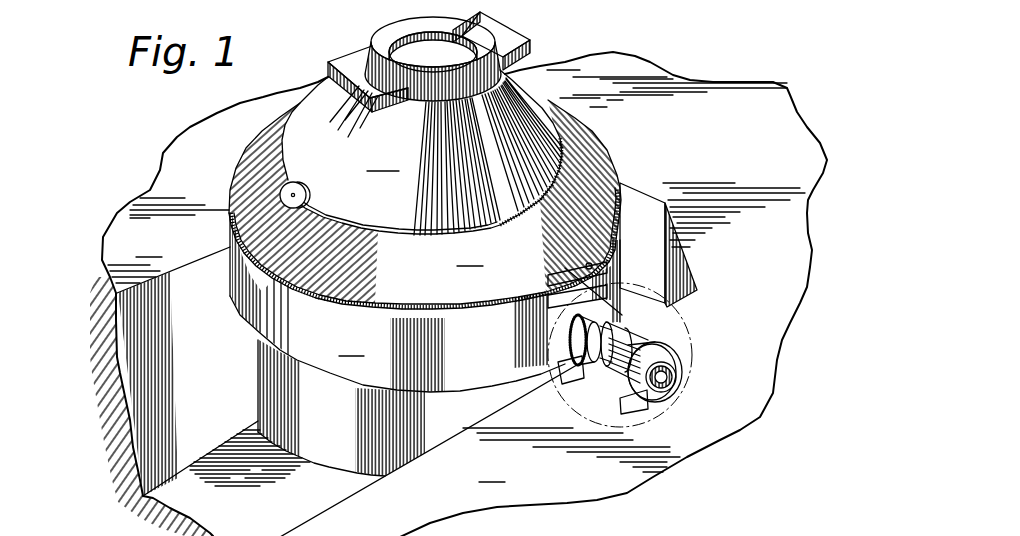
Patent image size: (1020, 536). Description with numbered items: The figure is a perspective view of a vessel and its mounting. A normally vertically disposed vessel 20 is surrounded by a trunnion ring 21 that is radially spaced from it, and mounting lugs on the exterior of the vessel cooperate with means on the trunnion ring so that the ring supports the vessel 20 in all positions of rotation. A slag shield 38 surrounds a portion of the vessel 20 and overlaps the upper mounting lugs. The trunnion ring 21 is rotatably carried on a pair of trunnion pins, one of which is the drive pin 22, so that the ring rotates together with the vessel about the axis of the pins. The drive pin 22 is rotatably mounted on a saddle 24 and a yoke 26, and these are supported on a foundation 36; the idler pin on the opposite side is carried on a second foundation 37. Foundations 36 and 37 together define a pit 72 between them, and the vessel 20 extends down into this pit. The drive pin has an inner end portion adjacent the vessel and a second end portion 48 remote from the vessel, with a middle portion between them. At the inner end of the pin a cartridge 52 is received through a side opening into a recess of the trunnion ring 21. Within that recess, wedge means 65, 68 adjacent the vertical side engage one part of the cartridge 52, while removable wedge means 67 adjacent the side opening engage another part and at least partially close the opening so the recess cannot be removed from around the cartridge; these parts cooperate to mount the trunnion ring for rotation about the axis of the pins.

The vessel 20 is at (421, 123).
The trunnion ring 21 is at (425, 344).
The drive pin 22 is at (607, 373).
The saddle 24 is at (608, 318).
The yoke 26 is at (688, 338).
The foundation 36 is at (458, 294).
The foundation 37 is at (402, 245).
The slag shield 38 is at (425, 193).
The second end portion 48 is at (668, 390).
The cartridge 52 is at (580, 292).
The wedge means 65 is at (570, 296).
The removable wedge means 67 is at (609, 294).
The wedge means 68 is at (560, 368).
The pit 72 is at (208, 477).